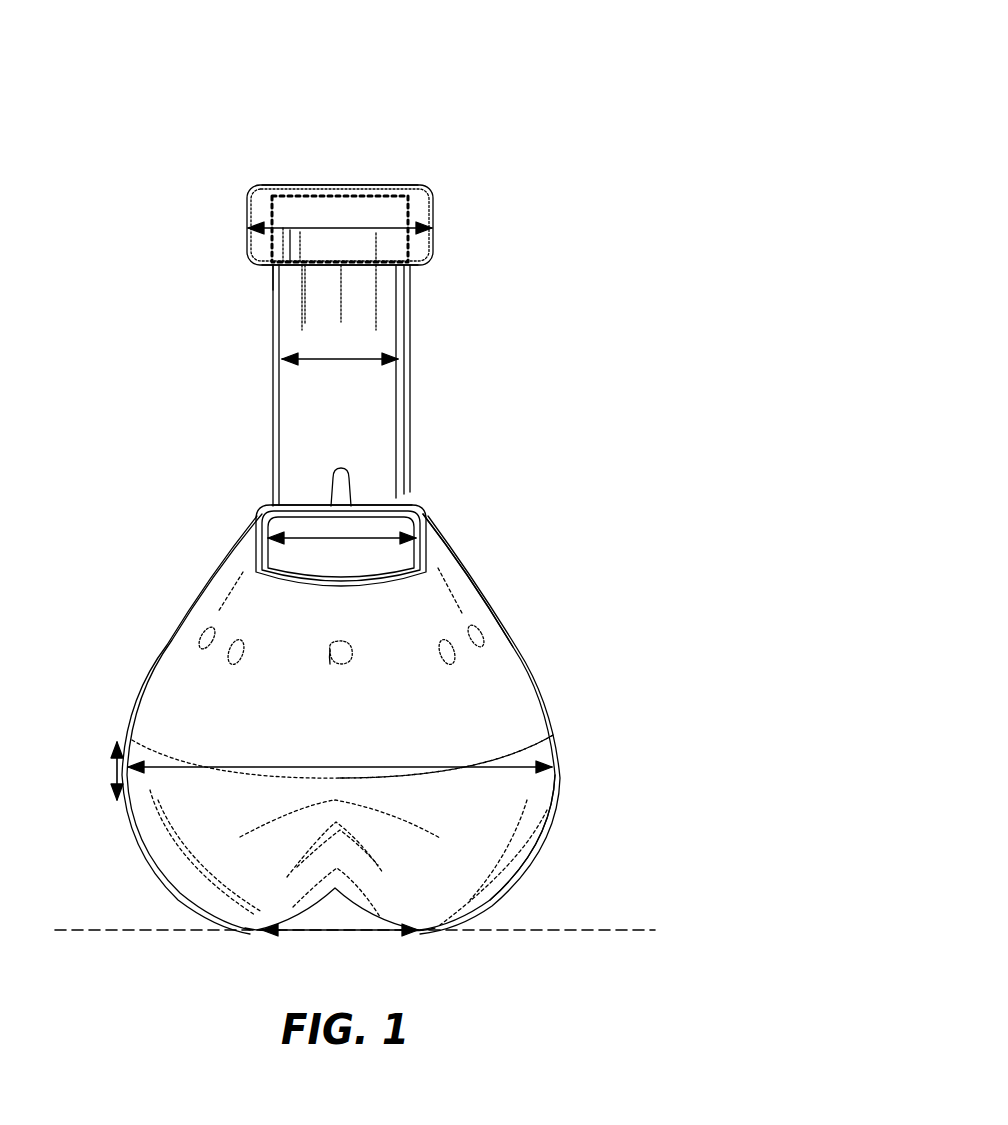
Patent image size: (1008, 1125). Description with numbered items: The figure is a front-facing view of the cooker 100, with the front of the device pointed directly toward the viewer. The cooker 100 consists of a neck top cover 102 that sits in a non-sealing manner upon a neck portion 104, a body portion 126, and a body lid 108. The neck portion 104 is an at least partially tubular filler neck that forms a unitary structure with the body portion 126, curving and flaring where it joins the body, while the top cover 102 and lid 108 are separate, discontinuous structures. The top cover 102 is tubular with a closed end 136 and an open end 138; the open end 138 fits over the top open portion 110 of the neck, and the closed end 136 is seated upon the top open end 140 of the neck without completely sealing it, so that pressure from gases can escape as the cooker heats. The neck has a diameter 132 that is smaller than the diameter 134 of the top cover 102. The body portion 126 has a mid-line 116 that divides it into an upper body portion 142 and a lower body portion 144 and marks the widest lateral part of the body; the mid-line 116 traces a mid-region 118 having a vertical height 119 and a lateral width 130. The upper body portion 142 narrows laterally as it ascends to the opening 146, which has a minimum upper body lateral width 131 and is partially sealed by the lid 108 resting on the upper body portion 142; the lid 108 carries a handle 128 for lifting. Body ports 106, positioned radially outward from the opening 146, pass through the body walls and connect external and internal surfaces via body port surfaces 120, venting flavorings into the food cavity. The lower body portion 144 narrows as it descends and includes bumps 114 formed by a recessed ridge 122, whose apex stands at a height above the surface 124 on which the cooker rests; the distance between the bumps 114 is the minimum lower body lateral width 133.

The cooker 100 is at (491, 62).
The neck top cover 102 is at (432, 230).
The neck portion 104 is at (452, 440).
The body ports 106 is at (352, 670).
The body lid 108 is at (385, 548).
The top open portion 110 is at (410, 265).
The bumps 114 is at (263, 940).
The mid-line 116 is at (402, 771).
The mid-region 118 is at (555, 770).
The vertical height 119 is at (116, 745).
The body port surfaces 120 is at (338, 643).
The recessed ridge 122 is at (322, 910).
The surface 124 is at (124, 932).
The body portion 126 is at (652, 536).
The handle 128 is at (337, 492).
The lateral width 130 is at (507, 773).
The minimum upper body lateral width 131 is at (310, 542).
The diameter of neck 132 is at (362, 360).
The minimum lower body lateral width 133 is at (298, 940).
The diameter of top 134 is at (292, 230).
The closed end of top 136 is at (331, 188).
The open end of top 138 is at (290, 263).
The top open end 140 is at (411, 193).
The upper body portion 142 is at (560, 633).
The lower body portion 144 is at (555, 905).
The opening 146 is at (405, 508).